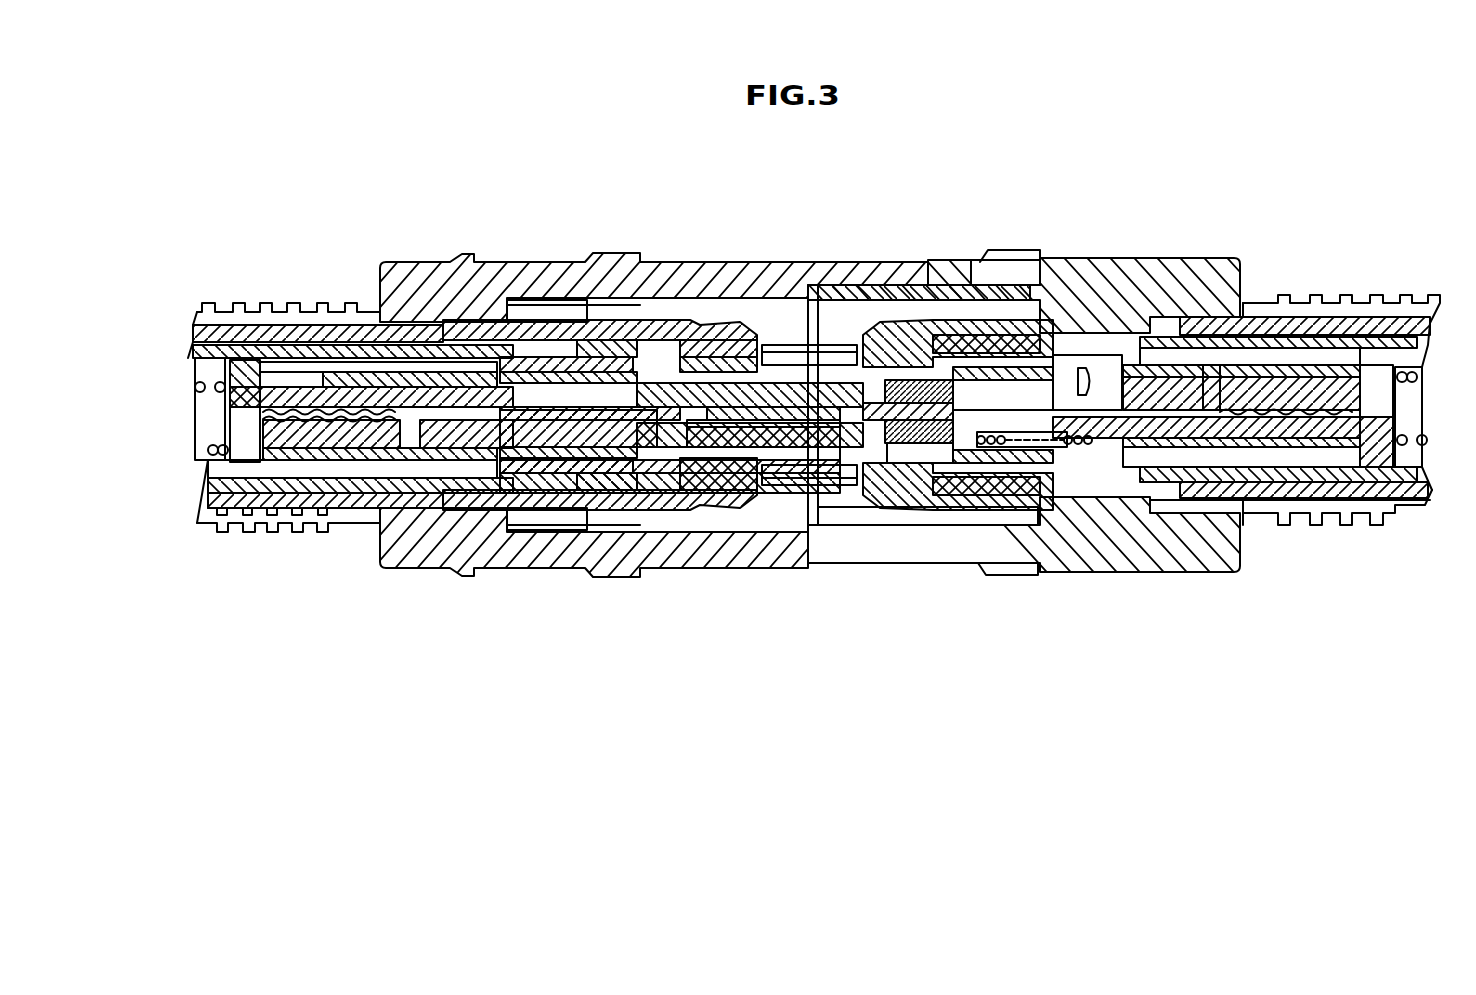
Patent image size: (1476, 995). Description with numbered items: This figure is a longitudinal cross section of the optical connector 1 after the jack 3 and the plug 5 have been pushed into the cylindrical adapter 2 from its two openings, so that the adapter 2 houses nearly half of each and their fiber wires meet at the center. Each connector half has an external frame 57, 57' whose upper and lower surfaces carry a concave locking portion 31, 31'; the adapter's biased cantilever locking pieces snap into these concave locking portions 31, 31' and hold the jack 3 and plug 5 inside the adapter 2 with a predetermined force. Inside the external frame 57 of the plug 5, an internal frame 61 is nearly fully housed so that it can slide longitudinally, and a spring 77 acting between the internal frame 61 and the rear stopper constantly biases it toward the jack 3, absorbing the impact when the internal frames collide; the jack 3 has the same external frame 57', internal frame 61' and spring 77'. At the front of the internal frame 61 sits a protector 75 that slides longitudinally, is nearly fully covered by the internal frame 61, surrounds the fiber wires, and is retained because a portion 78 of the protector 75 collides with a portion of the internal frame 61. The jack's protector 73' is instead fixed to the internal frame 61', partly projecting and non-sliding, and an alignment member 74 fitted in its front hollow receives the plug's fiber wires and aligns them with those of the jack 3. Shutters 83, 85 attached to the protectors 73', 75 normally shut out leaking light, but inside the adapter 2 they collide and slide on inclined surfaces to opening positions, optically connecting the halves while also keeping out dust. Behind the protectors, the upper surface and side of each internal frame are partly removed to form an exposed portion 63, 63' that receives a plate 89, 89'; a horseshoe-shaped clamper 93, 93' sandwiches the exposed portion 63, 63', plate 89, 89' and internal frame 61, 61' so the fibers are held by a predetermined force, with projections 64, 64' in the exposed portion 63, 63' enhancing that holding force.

The optical connector 1 is at (658, 655).
The adapter 2 is at (772, 578).
The jack 3 is at (313, 545).
The plug 5 is at (1297, 545).
The locking portion 31 is at (1115, 371).
The locking portion 31' is at (666, 389).
The external frame 57 is at (929, 452).
The external frame 57' is at (678, 486).
The internal frame 61 is at (1189, 484).
The internal frame 61' is at (371, 300).
The exposed portion 63 is at (1003, 475).
The exposed portion 63' is at (600, 348).
The projections 64 is at (1288, 459).
The projections 64' is at (348, 363).
The protector 73' is at (750, 319).
The alignment member 74 is at (817, 423).
The protector 75 is at (1020, 380).
The spring 77 is at (1434, 406).
The spring 77' is at (159, 381).
The portion of protector 78 is at (1083, 367).
The shutter 83 is at (895, 433).
The shutter 85 is at (920, 378).
The plate 89 is at (1331, 335).
The plate 89' is at (309, 492).
The clamper 93 is at (1206, 512).
The clamper 93' is at (360, 353).